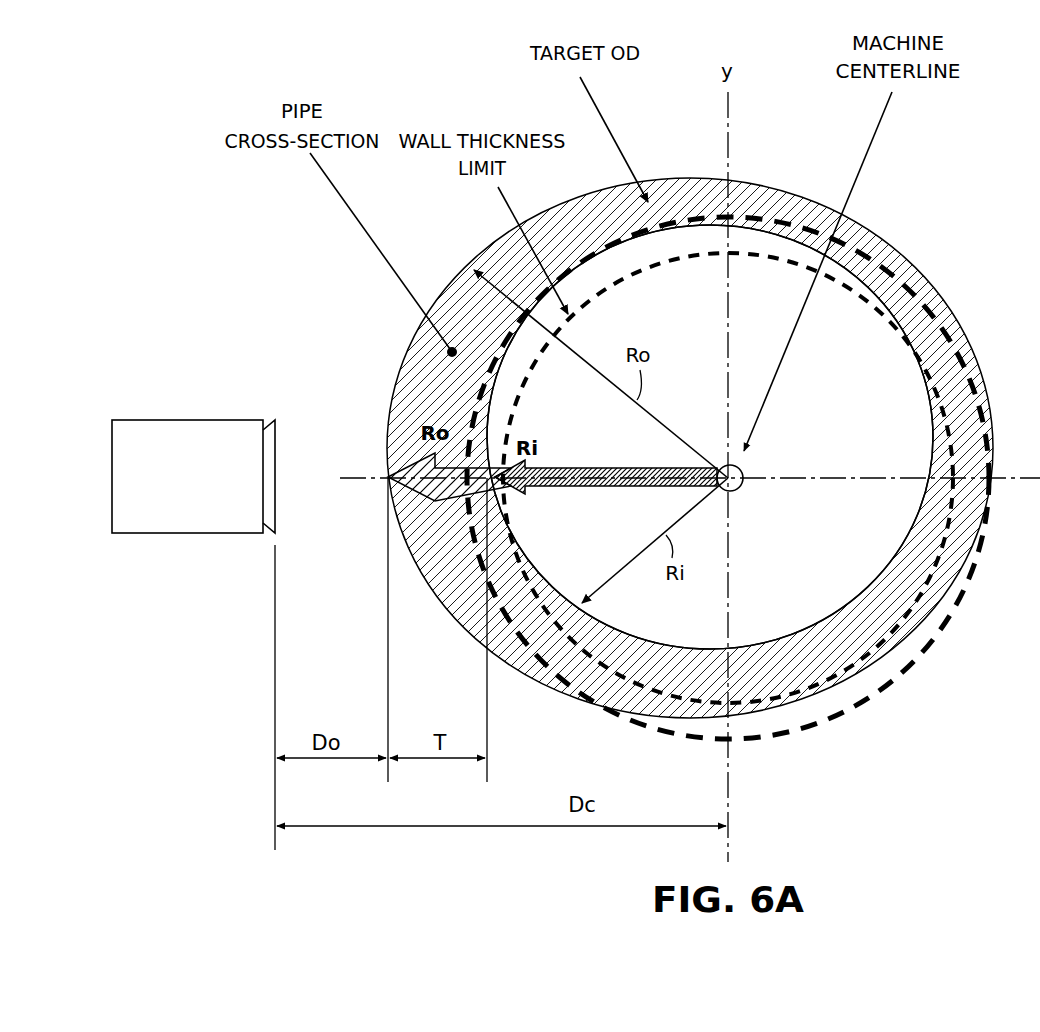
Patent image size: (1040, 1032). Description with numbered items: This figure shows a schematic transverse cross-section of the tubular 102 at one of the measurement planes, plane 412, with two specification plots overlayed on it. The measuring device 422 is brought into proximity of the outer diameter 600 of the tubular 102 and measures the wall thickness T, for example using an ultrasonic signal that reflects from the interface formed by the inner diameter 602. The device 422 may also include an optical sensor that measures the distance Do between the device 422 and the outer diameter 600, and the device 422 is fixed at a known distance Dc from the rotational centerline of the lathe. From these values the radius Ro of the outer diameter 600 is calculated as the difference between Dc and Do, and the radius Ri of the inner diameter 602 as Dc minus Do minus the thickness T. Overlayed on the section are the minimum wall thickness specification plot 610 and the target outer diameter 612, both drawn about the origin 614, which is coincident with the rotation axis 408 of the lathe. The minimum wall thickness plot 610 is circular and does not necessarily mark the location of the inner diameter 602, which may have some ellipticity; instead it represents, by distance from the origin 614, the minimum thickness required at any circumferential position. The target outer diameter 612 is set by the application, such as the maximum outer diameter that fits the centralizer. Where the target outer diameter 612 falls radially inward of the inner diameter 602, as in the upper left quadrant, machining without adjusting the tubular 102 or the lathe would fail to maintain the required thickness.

The tubular 102 is at (620, 406).
The measurement plane 412 is at (620, 406).
The outer diameter 600 is at (400, 372).
The inner diameter 602 is at (838, 613).
The target outer diameter 612 is at (883, 262).
The minimum wall thickness specification plot 610 is at (878, 312).
The rotation axis 408 is at (793, 452).
The origin 614 is at (745, 464).
The measuring device 422 is at (190, 420).